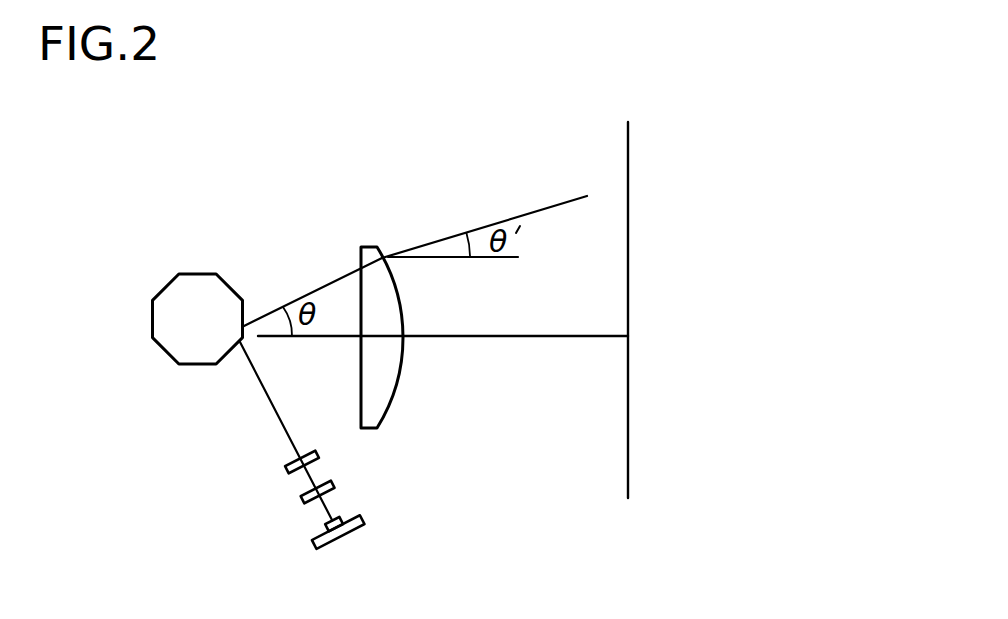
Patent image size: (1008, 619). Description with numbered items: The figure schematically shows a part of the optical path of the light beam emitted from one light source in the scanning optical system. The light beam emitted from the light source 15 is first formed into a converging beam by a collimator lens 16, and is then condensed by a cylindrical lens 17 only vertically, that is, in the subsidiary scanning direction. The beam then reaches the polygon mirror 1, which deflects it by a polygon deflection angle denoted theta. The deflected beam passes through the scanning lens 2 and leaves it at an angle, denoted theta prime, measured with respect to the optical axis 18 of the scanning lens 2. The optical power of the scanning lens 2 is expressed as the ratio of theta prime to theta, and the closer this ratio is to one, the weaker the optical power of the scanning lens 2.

The polygon mirror 1 is at (205, 270).
The scanning lens 2 is at (372, 242).
The light source 15 is at (343, 538).
The collimator lens 16 is at (298, 503).
The cylindrical lens 17 is at (282, 467).
The optical axis 18 is at (532, 337).